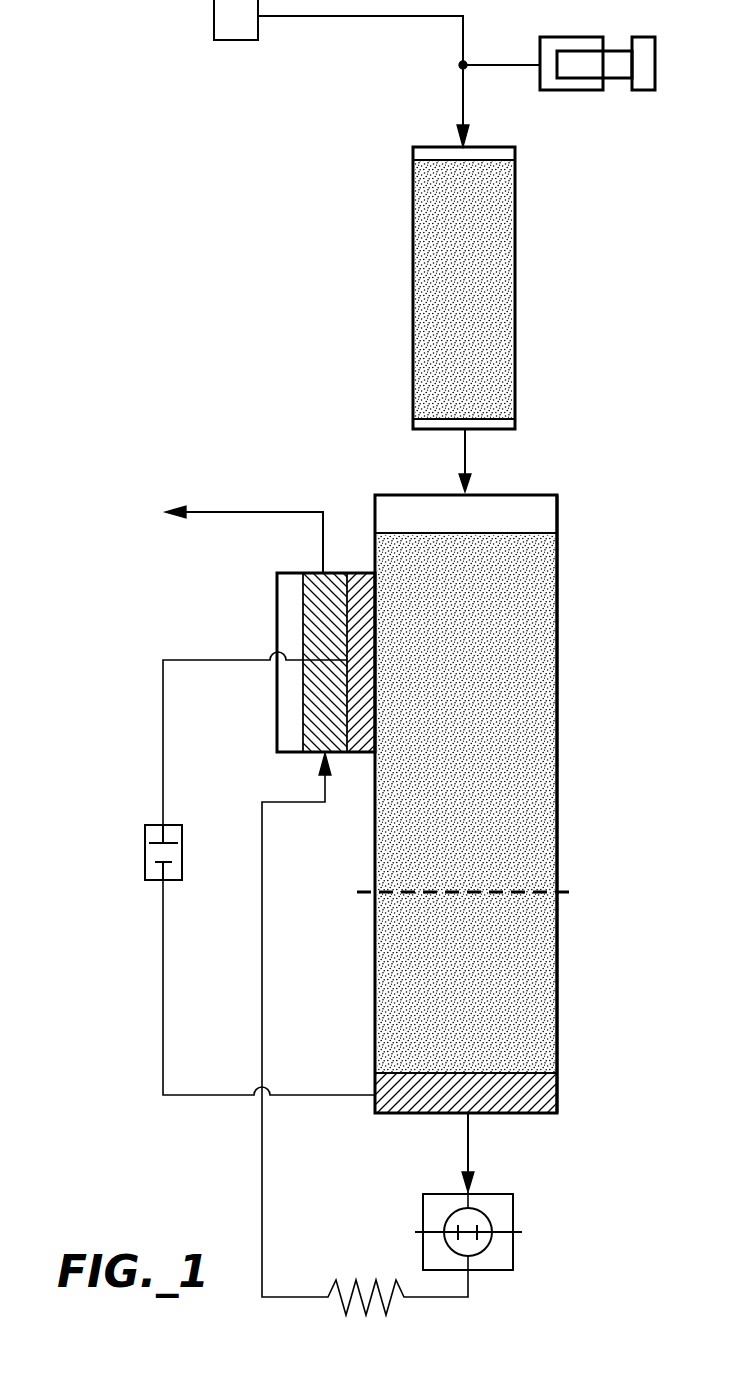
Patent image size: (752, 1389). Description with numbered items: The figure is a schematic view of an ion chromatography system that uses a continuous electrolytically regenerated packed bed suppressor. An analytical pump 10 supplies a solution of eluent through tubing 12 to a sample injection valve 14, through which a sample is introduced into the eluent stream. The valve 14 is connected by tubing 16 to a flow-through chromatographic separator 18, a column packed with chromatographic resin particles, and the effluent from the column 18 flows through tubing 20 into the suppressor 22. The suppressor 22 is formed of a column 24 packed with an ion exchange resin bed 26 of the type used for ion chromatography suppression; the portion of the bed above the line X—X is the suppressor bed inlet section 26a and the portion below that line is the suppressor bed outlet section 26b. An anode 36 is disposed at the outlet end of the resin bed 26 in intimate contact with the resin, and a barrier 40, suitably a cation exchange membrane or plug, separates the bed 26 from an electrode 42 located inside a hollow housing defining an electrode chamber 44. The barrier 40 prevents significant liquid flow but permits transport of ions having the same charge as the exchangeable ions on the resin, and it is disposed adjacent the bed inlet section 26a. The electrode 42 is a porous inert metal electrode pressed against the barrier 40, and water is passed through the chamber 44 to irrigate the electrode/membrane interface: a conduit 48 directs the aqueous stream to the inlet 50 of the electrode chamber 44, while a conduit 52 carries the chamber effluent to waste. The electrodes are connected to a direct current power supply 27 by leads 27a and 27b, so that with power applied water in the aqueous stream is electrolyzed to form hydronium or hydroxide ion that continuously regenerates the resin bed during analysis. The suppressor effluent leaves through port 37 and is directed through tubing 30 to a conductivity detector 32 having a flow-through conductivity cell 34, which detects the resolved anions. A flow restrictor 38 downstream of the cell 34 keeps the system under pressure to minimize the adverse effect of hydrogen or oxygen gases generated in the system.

The analytical pump 10 is at (258, 32).
The tubing 12 is at (463, 47).
The sample injection valve 14 is at (462, 66).
The tubing 16 is at (463, 110).
The chromatographic separator 18 is at (515, 275).
The tubing 20 is at (465, 450).
The suppressor 22 is at (481, 804).
The column 24 is at (557, 580).
The ion exchange resin bed 26 is at (470, 804).
The suppressor bed inlet section 26a is at (538, 693).
The suppressor bed outlet section 26b is at (390, 988).
The direct current power supply 27 is at (182, 838).
The lead 27a is at (210, 1100).
The lead 27b is at (210, 660).
The tubing 30 is at (463, 1148).
The conductivity detector 32 is at (515, 1250).
The flow-through conductivity cell 34 is at (482, 1212).
The anode 36 is at (557, 1095).
The port 37 is at (470, 1115).
The flow restrictor 38 is at (343, 1283).
The barrier 40 is at (365, 573).
The electrode 42 is at (313, 573).
The electrode chamber 44 is at (285, 720).
The conduit 48 is at (262, 922).
The inlet 50 is at (312, 628).
The conduit 52 is at (203, 512).